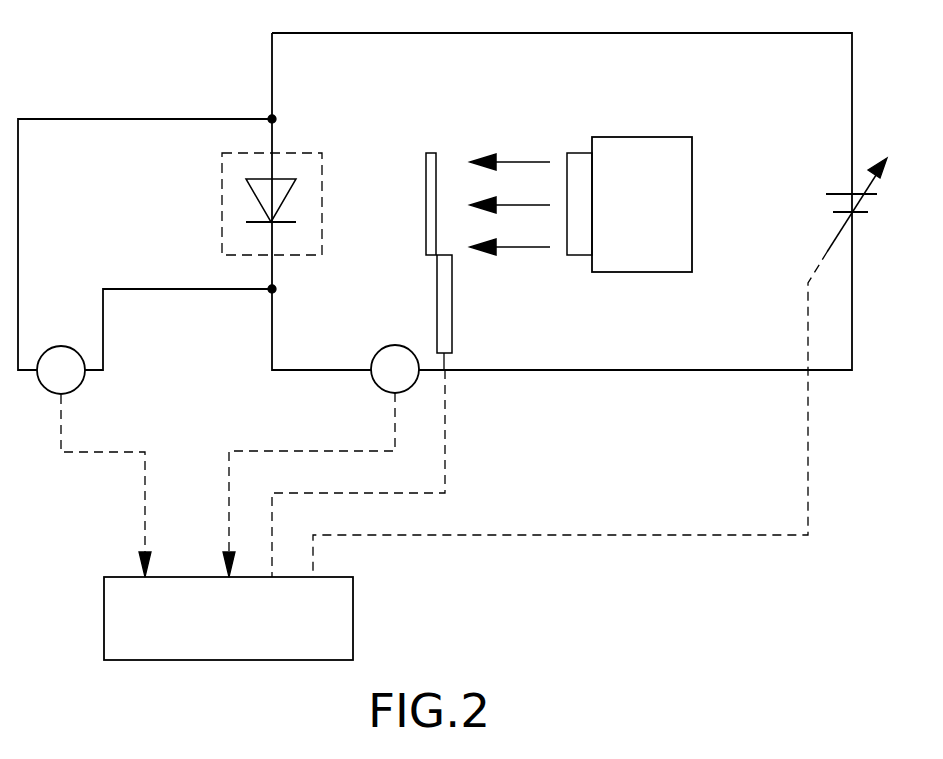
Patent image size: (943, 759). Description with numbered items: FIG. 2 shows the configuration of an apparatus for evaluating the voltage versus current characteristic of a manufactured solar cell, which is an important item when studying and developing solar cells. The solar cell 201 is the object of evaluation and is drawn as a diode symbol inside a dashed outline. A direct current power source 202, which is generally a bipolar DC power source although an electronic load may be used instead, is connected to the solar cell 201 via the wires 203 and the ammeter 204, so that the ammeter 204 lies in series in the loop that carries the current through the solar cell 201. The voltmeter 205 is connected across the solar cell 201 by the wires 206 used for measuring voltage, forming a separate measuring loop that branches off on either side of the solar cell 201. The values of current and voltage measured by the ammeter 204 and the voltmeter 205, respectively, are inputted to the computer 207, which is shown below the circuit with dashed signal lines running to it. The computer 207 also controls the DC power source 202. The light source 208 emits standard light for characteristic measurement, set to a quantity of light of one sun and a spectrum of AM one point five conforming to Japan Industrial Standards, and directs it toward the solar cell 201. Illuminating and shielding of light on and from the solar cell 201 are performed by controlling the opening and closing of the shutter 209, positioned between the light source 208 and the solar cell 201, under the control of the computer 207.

The solar cell 201 is at (222, 196).
The direct current power source 202 is at (876, 206).
The wires 203 is at (626, 371).
The ammeter 204 is at (379, 389).
The voltmeter 205 is at (77, 388).
The wires used for measuring voltage 206 is at (142, 118).
The computer 207 is at (353, 618).
The light source 208 is at (648, 137).
The shutter 209 is at (443, 282).